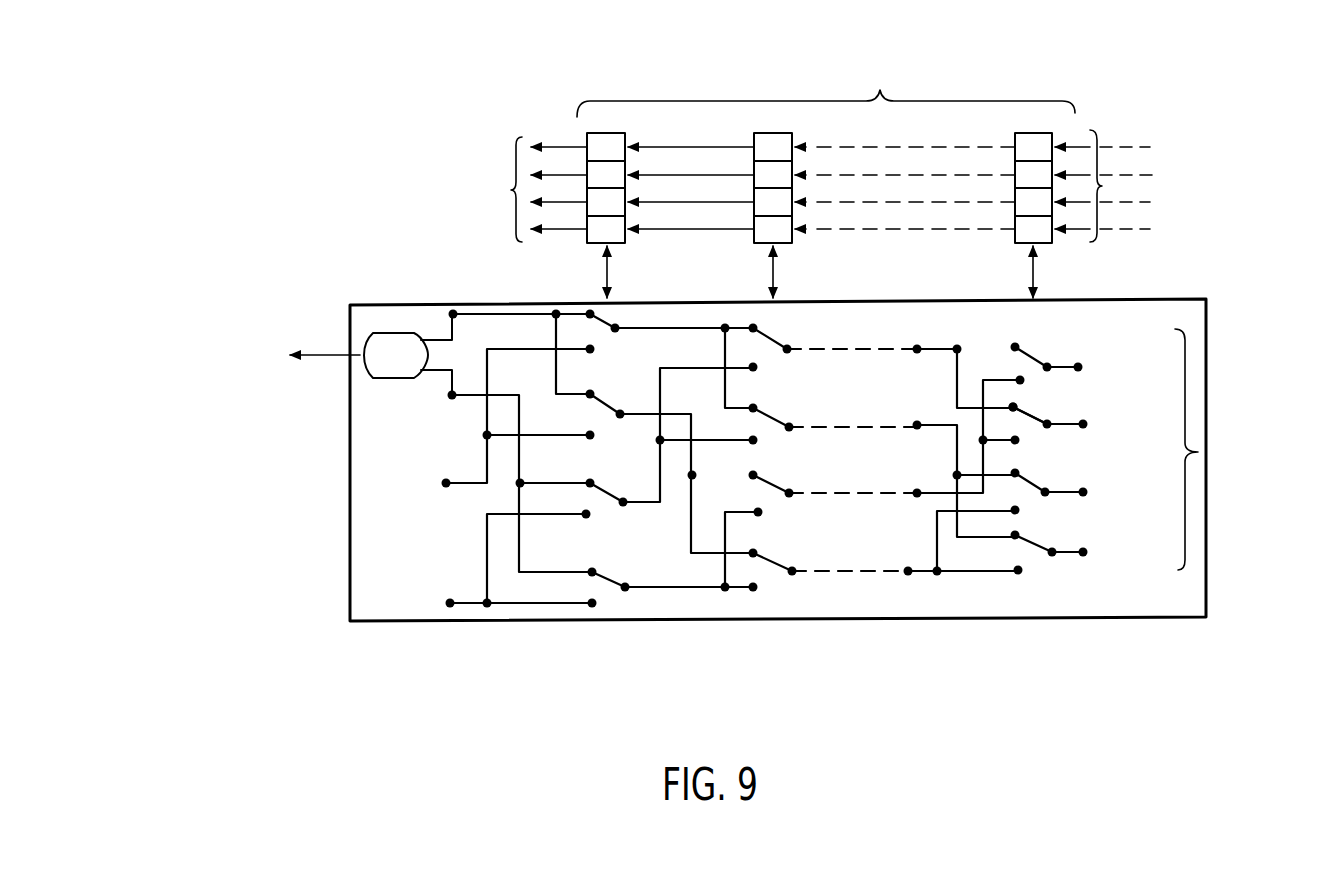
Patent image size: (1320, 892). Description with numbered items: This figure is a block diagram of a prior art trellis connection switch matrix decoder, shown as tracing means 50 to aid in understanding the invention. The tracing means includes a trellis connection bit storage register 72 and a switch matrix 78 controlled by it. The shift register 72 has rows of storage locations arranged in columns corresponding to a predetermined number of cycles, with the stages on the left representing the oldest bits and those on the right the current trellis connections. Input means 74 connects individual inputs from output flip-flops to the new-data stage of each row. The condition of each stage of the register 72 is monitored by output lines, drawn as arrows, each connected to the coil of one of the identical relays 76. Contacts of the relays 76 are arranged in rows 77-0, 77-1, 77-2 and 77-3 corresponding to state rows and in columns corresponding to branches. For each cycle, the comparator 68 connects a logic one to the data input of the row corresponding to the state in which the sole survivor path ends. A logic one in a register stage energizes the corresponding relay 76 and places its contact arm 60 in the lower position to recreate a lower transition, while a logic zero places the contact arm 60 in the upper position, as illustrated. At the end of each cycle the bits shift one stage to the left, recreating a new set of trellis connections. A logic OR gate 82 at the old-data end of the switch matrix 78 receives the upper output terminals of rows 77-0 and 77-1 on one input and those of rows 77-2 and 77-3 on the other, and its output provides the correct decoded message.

The oldest branch trellis connections discard note 50 is at (185, 149).
The trellis connection bit storage register 72 is at (915, 134).
The input means 74 is at (1104, 187).
The relay 76 is at (604, 334).
The row of relay contacts 77-0 is at (1059, 341).
The row of relay contacts 77-1 is at (1059, 413).
The row of relay contacts 77-2 is at (1054, 480).
The row of relay contacts 77-3 is at (1057, 538).
The contact arm 60 is at (1038, 413).
The comparator 68 is at (1204, 453).
The switch matrix 78 is at (388, 528).
The logic OR gate 82 is at (398, 362).